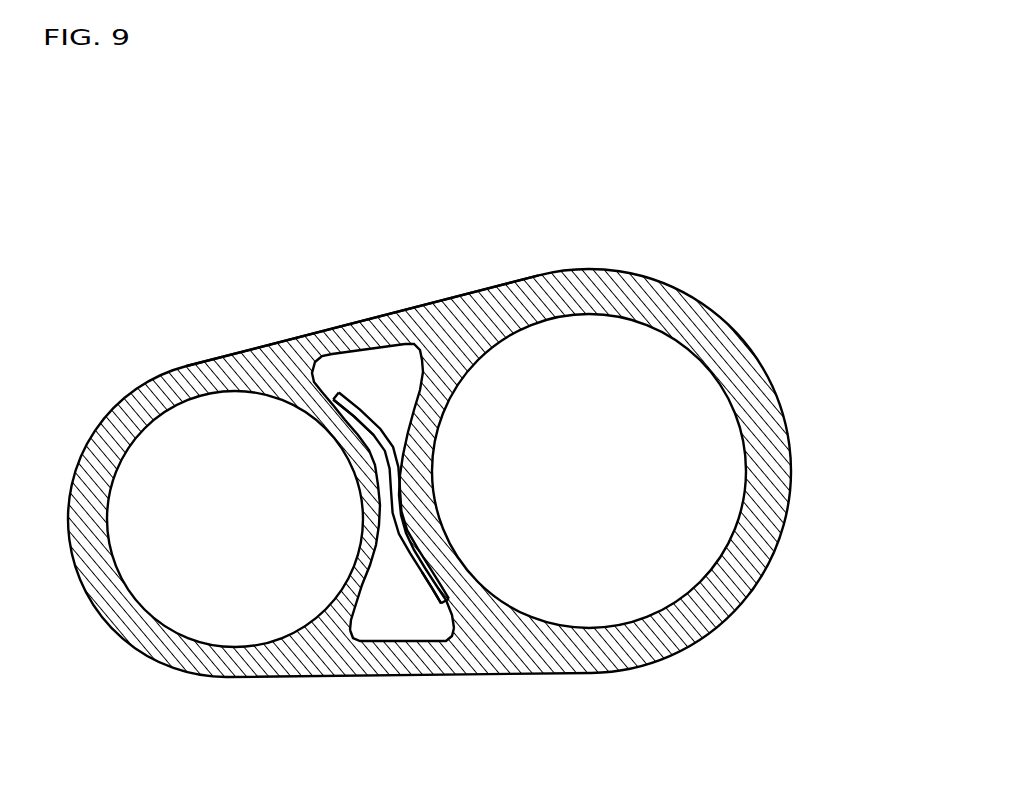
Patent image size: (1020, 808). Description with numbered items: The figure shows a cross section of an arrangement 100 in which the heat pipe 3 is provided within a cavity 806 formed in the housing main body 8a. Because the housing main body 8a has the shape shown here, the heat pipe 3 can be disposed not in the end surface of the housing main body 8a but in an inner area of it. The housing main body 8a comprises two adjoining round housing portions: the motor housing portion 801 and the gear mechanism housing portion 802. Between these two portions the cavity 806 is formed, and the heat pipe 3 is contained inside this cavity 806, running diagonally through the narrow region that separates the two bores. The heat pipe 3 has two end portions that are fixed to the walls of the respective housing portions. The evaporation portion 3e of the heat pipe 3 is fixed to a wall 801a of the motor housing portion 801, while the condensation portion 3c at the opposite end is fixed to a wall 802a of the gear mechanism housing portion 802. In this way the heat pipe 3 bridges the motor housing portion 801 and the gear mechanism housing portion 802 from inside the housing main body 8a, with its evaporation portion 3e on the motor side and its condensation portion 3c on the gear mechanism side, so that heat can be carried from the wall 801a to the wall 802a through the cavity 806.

The gear pump housing assembly 100 is at (460, 115).
The housing main body 8a is at (397, 310).
The gear mechanism housing portion 802 is at (208, 478).
The motor housing portion 801 is at (663, 471).
The wall of the gear mechanism housing portion 802a is at (333, 418).
The wall of the motor housing portion 801a is at (443, 563).
The cavity 806 is at (390, 612).
The heat pipe 3 is at (368, 515).
The condensation portion 3c is at (334, 388).
The evaporation portion 3e is at (436, 590).